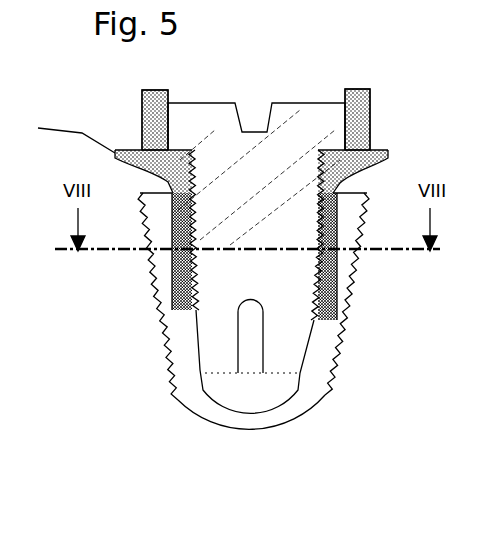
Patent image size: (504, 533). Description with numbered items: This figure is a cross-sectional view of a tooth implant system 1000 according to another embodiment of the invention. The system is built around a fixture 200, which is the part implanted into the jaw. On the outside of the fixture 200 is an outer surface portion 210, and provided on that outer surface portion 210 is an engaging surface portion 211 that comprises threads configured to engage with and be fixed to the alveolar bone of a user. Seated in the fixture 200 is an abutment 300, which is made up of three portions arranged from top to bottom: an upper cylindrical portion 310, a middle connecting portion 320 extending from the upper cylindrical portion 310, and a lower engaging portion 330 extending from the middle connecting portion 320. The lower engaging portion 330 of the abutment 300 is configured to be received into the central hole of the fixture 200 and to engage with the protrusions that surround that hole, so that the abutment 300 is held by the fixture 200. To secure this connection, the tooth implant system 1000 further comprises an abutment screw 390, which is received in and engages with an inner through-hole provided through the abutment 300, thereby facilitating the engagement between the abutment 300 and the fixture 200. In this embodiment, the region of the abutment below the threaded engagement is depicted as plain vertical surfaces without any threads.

The tooth implant system 1000 is at (404, 57).
The fixture 200 is at (175, 400).
The outer surface portion 210 is at (163, 330).
The engaging surface portion 211 is at (167, 358).
The abutment 300 is at (135, 150).
The upper cylindrical portion 310 is at (160, 118).
The middle connecting portion 320 is at (352, 167).
The lower engaging portion 330 is at (180, 266).
The abutment screw 390 is at (289, 113).